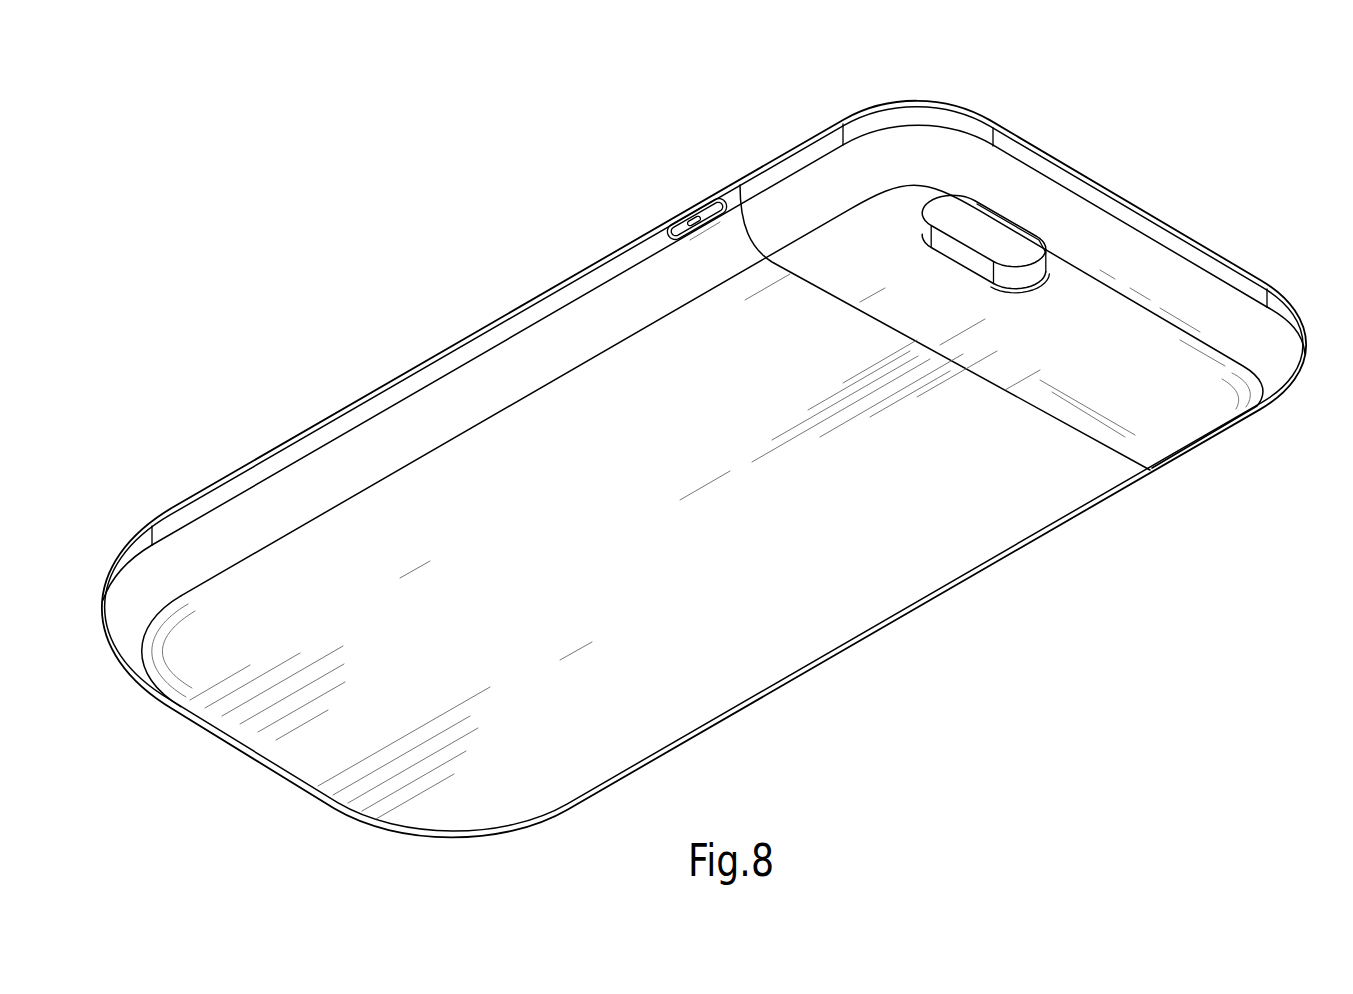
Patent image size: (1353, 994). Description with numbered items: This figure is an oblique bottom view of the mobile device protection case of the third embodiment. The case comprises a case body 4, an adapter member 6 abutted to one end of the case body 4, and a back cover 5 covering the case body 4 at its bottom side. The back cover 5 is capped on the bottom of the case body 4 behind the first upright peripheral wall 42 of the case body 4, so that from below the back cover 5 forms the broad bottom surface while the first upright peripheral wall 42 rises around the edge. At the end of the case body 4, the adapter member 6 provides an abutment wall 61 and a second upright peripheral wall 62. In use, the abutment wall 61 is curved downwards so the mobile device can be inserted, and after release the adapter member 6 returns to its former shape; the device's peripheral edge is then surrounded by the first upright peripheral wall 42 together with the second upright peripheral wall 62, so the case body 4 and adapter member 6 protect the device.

The case body 4 is at (313, 417).
The first upright peripheral wall 42 is at (440, 367).
The back cover 5 is at (603, 410).
The adapter member 6 is at (1042, 135).
The abutment wall 61 is at (1130, 345).
The second upright peripheral wall 62 is at (1157, 234).